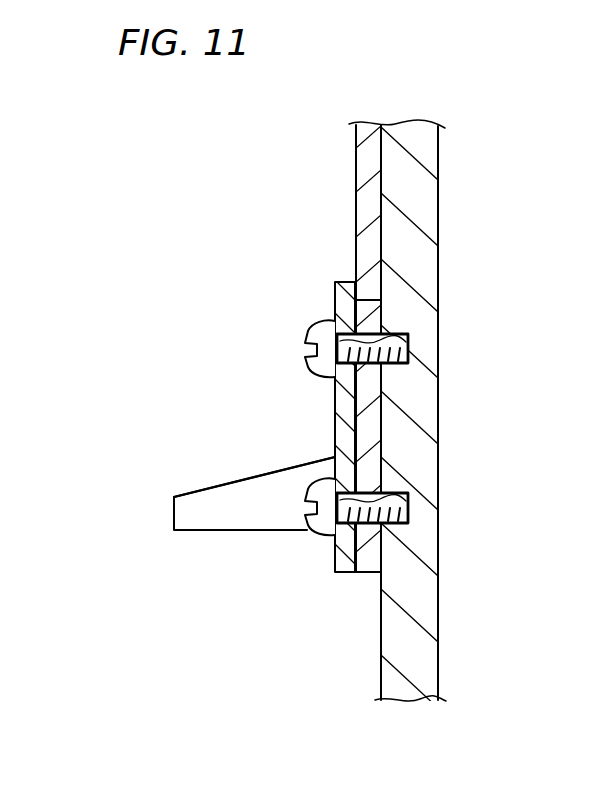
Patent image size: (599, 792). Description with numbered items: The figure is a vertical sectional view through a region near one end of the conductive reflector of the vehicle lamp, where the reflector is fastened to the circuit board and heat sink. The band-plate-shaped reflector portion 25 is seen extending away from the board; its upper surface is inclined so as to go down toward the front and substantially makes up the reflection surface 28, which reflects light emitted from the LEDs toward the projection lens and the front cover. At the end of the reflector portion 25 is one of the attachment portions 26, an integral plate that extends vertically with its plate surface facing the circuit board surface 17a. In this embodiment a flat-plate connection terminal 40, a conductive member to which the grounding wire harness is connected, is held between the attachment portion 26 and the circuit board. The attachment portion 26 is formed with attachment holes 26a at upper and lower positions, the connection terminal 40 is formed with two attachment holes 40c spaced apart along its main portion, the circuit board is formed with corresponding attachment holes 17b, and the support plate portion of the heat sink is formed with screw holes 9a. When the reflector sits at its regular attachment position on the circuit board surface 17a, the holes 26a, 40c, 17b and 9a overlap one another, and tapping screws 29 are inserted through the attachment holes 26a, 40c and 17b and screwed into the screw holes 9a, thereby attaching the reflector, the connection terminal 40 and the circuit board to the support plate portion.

The circuit board surface 17a is at (355, 159).
The attachment holes 17b is at (409, 350).
The connection terminal 40 is at (381, 300).
The attachment holes 40c is at (398, 486).
The screw holes 9a is at (408, 347).
The tapping screws 29 is at (308, 360).
The attachment portions 26 is at (346, 563).
The attachment holes 26a is at (326, 318).
The reflector portion 25 is at (197, 515).
The reflection surface 28 is at (212, 487).